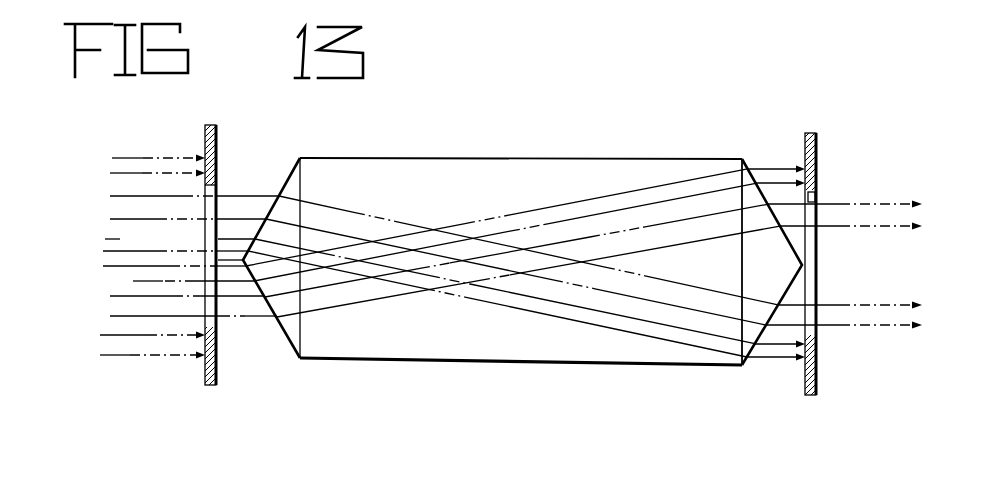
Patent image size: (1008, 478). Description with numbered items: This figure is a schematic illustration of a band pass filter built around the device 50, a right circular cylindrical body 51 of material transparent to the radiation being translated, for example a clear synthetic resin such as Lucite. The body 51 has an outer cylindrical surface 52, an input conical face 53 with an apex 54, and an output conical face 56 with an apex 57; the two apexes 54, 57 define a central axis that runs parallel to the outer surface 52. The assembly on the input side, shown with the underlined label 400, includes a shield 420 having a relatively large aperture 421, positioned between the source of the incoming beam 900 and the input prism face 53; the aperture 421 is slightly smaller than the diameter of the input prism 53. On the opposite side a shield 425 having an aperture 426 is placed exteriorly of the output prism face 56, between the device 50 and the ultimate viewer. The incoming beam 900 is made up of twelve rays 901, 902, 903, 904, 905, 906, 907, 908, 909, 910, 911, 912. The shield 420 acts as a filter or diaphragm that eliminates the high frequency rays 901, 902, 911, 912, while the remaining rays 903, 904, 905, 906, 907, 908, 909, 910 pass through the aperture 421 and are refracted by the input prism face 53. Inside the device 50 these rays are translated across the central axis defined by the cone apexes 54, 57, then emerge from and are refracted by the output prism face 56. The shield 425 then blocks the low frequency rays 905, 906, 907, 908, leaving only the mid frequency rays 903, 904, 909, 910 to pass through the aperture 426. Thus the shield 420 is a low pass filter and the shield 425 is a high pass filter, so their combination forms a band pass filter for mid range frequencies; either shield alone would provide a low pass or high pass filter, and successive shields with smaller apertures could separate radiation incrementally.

The device 50 is at (516, 418).
The right circular cylindrical body 51 is at (532, 150).
The outer surface 52 is at (442, 172).
The input conical face 53 is at (264, 221).
The apex 54 is at (218, 260).
The output conical face 56 is at (764, 306).
The apex 57 is at (805, 264).
The input assembly 400 is at (300, 420).
The shield 420 is at (203, 154).
The aperture 421 is at (214, 186).
The shield 425 is at (854, 244).
The aperture 426 is at (815, 197).
The beam 900 is at (145, 391).
The ray 901 is at (142, 158).
The ray 902 is at (142, 173).
The ray 903 is at (135, 196).
The ray 904 is at (133, 219).
The ray 905 is at (125, 239).
The ray 906 is at (118, 251).
The ray 907 is at (133, 266).
The ray 908 is at (140, 281).
The ray 909 is at (140, 296).
The ray 910 is at (135, 316).
The ray 911 is at (138, 335).
The ray 912 is at (138, 363).